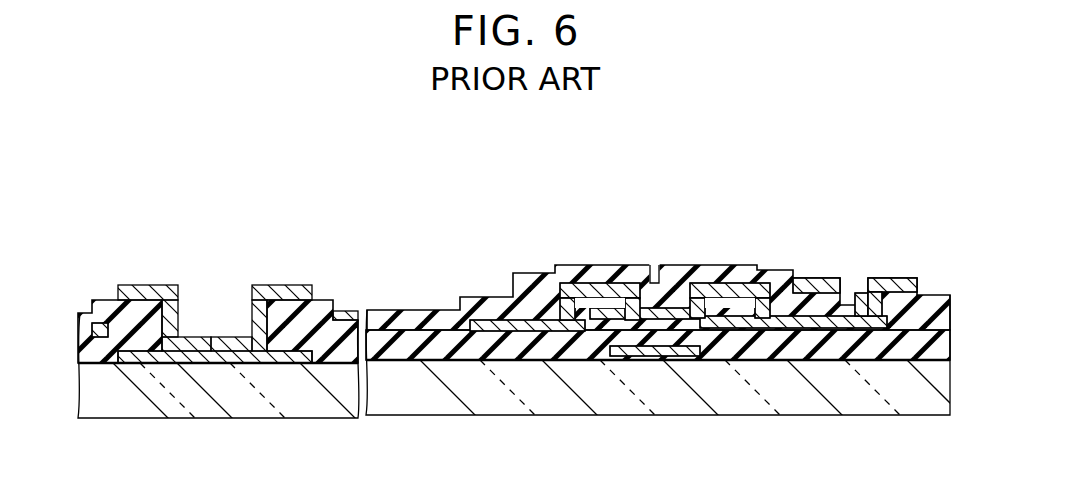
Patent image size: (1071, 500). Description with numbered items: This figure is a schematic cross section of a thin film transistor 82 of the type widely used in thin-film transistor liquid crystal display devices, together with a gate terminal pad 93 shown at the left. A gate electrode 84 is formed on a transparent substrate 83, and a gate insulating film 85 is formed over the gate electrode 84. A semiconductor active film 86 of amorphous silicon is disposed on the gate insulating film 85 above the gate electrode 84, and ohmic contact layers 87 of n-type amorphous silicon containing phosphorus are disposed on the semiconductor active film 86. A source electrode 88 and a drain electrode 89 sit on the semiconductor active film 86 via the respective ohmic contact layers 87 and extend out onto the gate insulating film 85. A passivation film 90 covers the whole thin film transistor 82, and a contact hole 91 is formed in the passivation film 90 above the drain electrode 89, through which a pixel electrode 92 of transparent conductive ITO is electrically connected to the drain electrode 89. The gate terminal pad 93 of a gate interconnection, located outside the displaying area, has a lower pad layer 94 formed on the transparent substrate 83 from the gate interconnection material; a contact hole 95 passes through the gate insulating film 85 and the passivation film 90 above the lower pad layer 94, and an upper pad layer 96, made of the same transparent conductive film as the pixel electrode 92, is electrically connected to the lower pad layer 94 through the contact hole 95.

The thin film transistor 82 is at (655, 252).
The transparent substrate 83 is at (916, 373).
The gate electrode 84 is at (640, 356).
The gate insulating film 85 is at (440, 345).
The semiconductor active film 86 is at (737, 329).
The ohmic contact layers 87 is at (583, 298).
The source electrode 88 is at (495, 320).
The drain electrode 89 is at (790, 293).
The passivation film 90 is at (397, 310).
The contact hole 91 is at (864, 295).
The pixel electrode 92 is at (897, 280).
The gate terminal pad 93 is at (289, 268).
The lower pad layer 94 is at (233, 358).
The contact hole 95 is at (233, 285).
The upper pad layer 96 is at (138, 285).